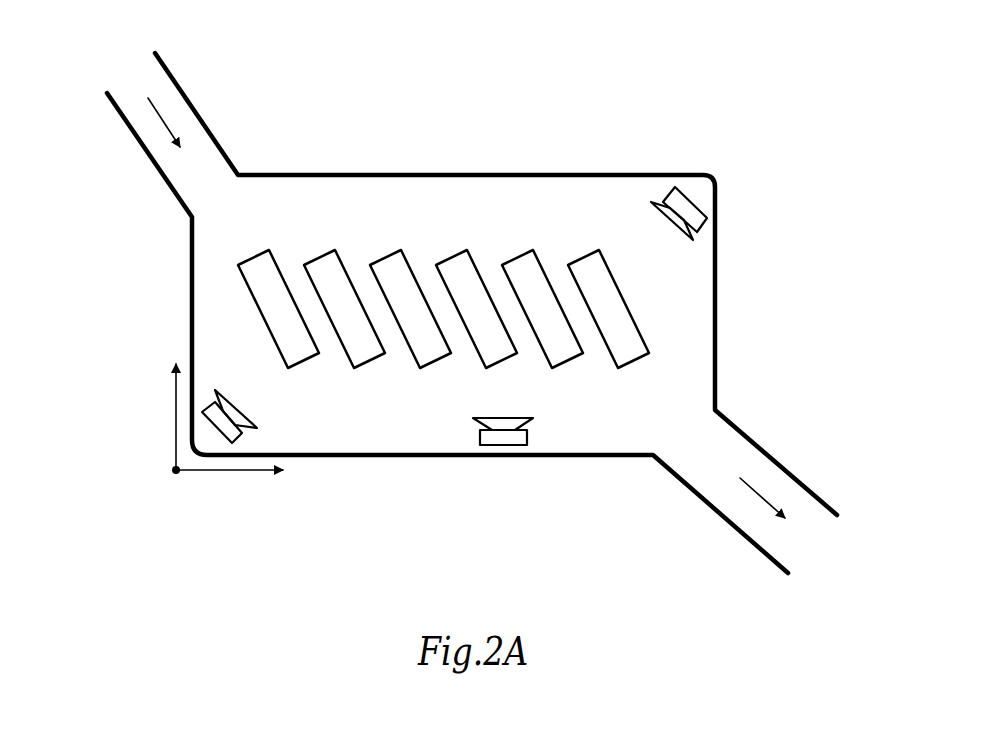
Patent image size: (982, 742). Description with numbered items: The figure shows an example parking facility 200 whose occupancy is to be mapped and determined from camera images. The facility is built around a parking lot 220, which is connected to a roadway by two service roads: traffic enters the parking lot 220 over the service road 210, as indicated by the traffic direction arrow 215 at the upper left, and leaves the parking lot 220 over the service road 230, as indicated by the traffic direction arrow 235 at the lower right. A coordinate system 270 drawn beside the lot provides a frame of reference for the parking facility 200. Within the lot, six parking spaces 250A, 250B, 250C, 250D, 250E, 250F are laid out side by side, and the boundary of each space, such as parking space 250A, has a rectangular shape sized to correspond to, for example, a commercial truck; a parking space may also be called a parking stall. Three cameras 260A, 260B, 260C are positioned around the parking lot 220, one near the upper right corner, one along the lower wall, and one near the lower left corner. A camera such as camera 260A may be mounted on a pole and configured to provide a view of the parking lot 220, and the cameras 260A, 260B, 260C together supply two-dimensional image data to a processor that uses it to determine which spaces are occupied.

The parking facility 200 is at (757, 80).
The service road 210 is at (195, 111).
The traffic direction arrow 215 is at (170, 119).
The parking lot 220 is at (433, 457).
The service road 230 is at (773, 459).
The traffic direction arrow 235 is at (748, 488).
The parking space 250A is at (256, 258).
The parking space 250B is at (322, 258).
The parking space 250C is at (388, 258).
The parking space 250D is at (454, 258).
The parking space 250E is at (520, 258).
The parking space 250F is at (586, 258).
The camera 260A is at (688, 202).
The camera 260B is at (528, 437).
The camera 260C is at (240, 406).
The coordinate system 270 is at (217, 472).